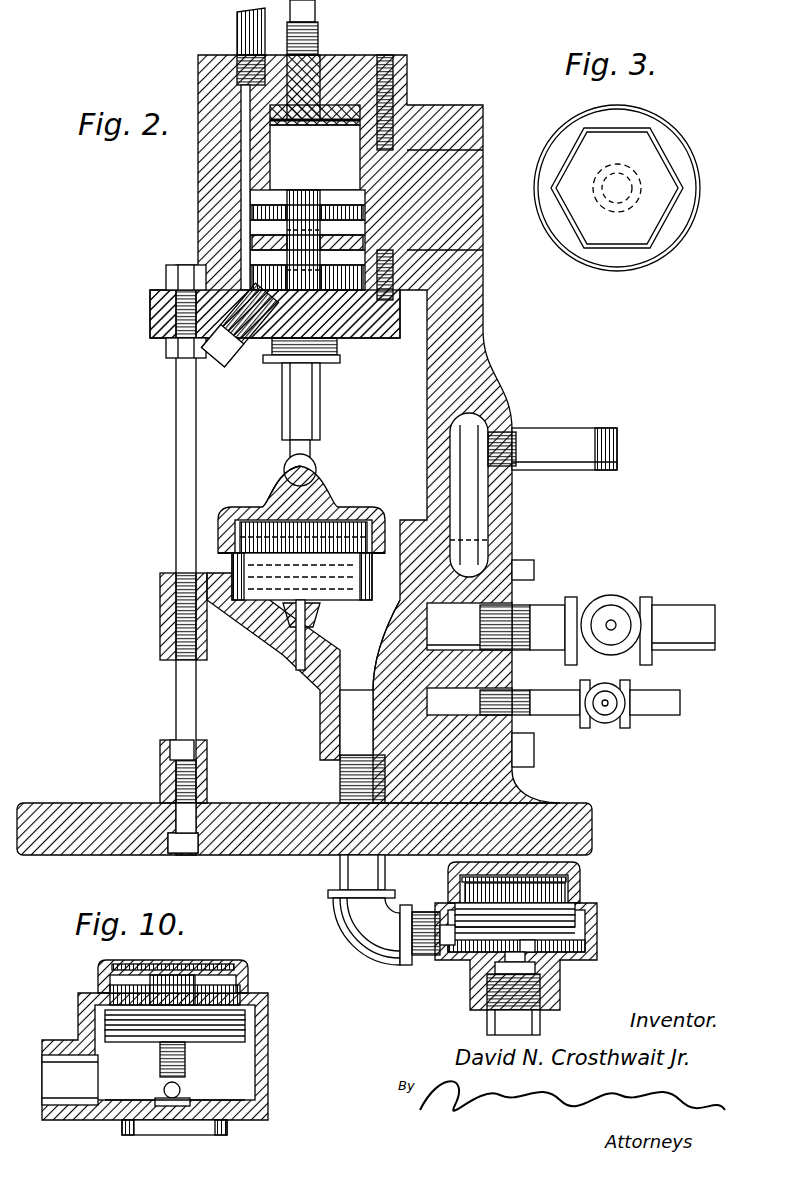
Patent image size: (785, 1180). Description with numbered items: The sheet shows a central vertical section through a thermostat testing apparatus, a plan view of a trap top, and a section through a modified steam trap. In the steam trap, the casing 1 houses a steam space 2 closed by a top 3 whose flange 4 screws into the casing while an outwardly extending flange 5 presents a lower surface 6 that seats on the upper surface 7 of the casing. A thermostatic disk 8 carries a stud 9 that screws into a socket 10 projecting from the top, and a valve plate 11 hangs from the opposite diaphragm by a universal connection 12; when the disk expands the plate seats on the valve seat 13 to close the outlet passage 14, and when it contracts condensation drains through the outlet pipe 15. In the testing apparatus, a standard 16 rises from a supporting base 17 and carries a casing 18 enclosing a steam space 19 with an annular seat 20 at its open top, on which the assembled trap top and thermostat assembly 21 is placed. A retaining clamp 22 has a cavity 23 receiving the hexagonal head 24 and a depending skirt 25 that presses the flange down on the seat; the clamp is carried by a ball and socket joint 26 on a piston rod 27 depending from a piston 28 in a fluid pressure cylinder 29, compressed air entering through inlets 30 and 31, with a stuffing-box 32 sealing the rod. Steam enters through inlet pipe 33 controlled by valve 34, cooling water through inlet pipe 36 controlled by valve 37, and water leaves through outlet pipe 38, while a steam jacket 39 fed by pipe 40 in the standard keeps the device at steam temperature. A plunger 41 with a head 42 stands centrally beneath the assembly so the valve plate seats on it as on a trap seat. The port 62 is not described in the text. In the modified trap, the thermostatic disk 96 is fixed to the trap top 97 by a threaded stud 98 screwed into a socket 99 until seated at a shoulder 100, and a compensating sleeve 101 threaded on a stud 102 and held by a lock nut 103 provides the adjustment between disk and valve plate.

In FIG. 2, the casing 1 is at (598, 935).
In FIG. 2, the steam space 2 is at (590, 942).
In FIG. 2, the top 3 is at (582, 890).
In FIG. 3, the top 3 is at (680, 206).
In FIG. 10, the top 3 is at (250, 978).
In FIG. 2, the flange 4 is at (590, 925).
In FIG. 2, the outwardly extending flange 5 is at (580, 908).
In FIG. 3, the outwardly extending flange 5 is at (690, 165).
In FIG. 10, the outwardly extending flange 5 is at (268, 1002).
In FIG. 2, the lower surface 6 is at (590, 912).
In FIG. 10, the lower surface 6 is at (268, 1012).
In FIG. 2, the upper surface 7 is at (425, 958).
In FIG. 2, the thermostatic disk 8 is at (590, 930).
In FIG. 2, the stud 9 is at (582, 866).
In FIG. 2, the socket 10 is at (460, 885).
In FIG. 2, the valve plate 11 is at (530, 958).
In FIG. 2, the universal connection 12 is at (560, 950).
In FIG. 2, the valve seat 13 is at (545, 972).
In FIG. 2, the outlet passage 14 is at (495, 980).
In FIG. 2, the outlet pipe 15 is at (487, 1020).
In FIG. 2, the standard 16 is at (486, 352).
In FIG. 2, the supporting base 17 is at (100, 803).
In FIG. 2, the casing 18 is at (258, 630).
In FIG. 2, the steam space 19 is at (292, 650).
In FIG. 2, the annular seat 20 is at (163, 585).
In FIG. 2, the trap top and thermostat assembly 21 is at (348, 492).
In FIG. 2, the retaining clamp 22 is at (263, 502).
In FIG. 2, the cavity 23 is at (230, 526).
In FIG. 2, the hexagonal head 24 is at (340, 540).
In FIG. 3, the hexagonal head 24 is at (655, 160).
In FIG. 2, the depending skirt 25 is at (218, 534).
In FIG. 2, the ball and socket joint 26 is at (290, 466).
In FIG. 2, the piston rod 27 is at (296, 403).
In FIG. 2, the piston 28 is at (252, 245).
In FIG. 2, the fluid pressure cylinder 29 is at (250, 150).
In FIG. 2, the inlet 30 is at (240, 70).
In FIG. 2, the inlet 31 is at (176, 314).
In FIG. 2, the stuffing-box 32 is at (267, 350).
In FIG. 2, the inlet pipe 33 is at (520, 603).
In FIG. 2, the valve 34 is at (625, 606).
In FIG. 2, the inlet pipe 36 is at (540, 717).
In FIG. 2, the valve 37 is at (612, 724).
In FIG. 2, the outlet pipe 38 is at (348, 856).
In FIG. 2, the steam jacket 39 is at (475, 425).
In FIG. 2, the pipe 40 is at (592, 445).
In FIG. 2, the plunger 41 is at (303, 672).
In FIG. 2, the head 42 is at (290, 640).
In FIG. 2, the inlet port 62 is at (448, 948).
In FIG. 10, the thermostatic disk 96 is at (235, 1010).
In FIG. 10, the trap top 97 is at (120, 982).
In FIG. 10, the threaded stud 98 is at (195, 975).
In FIG. 10, the socket 99 is at (95, 997).
In FIG. 10, the shoulder 100 is at (205, 990).
In FIG. 10, the compensating sleeve 101 is at (185, 1068).
In FIG. 10, the stud 102 is at (190, 1055).
In FIG. 10, the lock nut 103 is at (160, 1050).